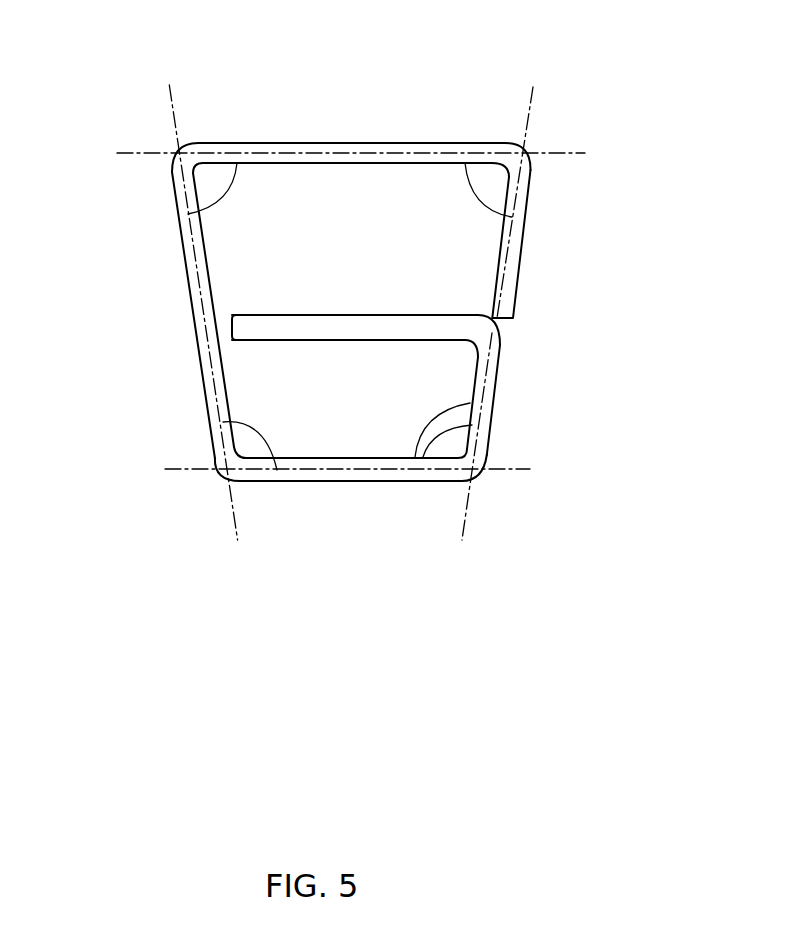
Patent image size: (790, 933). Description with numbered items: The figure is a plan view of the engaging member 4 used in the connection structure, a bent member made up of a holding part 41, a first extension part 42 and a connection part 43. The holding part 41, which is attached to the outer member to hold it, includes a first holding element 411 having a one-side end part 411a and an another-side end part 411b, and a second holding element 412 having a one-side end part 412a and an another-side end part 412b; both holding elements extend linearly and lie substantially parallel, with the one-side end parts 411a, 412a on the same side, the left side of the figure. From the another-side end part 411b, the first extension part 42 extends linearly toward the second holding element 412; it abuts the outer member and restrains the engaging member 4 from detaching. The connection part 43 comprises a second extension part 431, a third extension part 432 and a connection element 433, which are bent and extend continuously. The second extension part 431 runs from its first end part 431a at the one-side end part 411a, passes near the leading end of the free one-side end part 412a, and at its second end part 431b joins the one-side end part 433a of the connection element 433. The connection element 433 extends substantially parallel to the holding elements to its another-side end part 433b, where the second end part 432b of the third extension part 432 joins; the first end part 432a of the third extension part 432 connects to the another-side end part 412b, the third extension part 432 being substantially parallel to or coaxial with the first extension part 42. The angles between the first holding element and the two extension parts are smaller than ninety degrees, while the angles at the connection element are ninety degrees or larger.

The engaging member 4 is at (371, 388).
The holding part 41 is at (351, 172).
The first holding element 411 is at (284, 160).
The second holding element 412 is at (332, 330).
The one-side end part 411a is at (192, 138).
The another-side end part 411b is at (507, 138).
The one-side end part 412a is at (235, 312).
The another-side end part 412b is at (496, 288).
The first extension part 42 is at (520, 232).
The connection part 43 is at (289, 474).
The second extension part 431 is at (203, 353).
The first end part 431a is at (170, 170).
The second end part 431b is at (221, 470).
The third extension part 432 is at (477, 378).
The first end part 432a is at (504, 336).
The second end part 432b is at (487, 466).
The connection element 433 is at (347, 473).
The one-side end part 433a is at (241, 485).
The another-side end part 433b is at (458, 484).